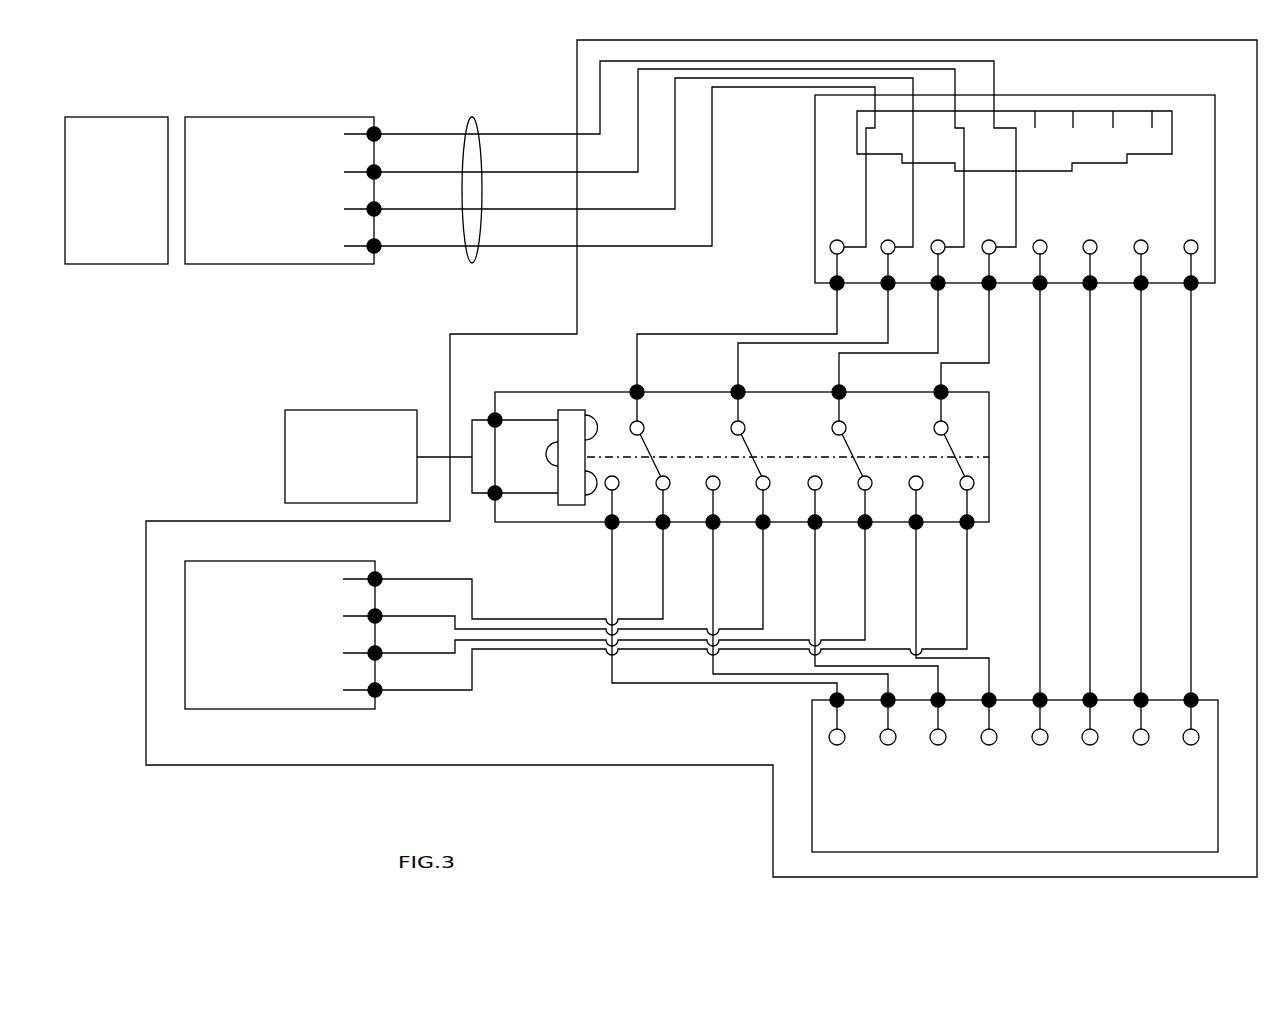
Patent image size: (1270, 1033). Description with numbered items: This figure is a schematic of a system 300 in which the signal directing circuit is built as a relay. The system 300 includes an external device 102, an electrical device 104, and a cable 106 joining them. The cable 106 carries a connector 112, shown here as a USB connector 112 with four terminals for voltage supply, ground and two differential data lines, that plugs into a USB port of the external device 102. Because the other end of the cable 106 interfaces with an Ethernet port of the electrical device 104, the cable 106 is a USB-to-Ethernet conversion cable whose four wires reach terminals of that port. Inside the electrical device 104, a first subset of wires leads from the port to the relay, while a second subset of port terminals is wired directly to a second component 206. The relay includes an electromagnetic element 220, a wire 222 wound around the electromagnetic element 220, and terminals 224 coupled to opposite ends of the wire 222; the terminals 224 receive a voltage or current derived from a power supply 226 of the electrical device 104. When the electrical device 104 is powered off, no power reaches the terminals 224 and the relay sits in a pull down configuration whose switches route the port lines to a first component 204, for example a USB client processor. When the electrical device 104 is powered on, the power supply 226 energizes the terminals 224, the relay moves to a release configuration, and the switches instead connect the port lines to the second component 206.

The external device 102 is at (140, 268).
The USB connector 112 is at (275, 268).
The cable 106 is at (464, 250).
The relay terminals 224 is at (489, 415).
The power supply 226 is at (352, 410).
The wire 222 is at (589, 431).
The electromagnetic element 220 is at (553, 483).
The electrical device 104 is at (182, 520).
The system 300 is at (137, 402).
The first component 204 is at (275, 710).
The second component 206 is at (811, 730).